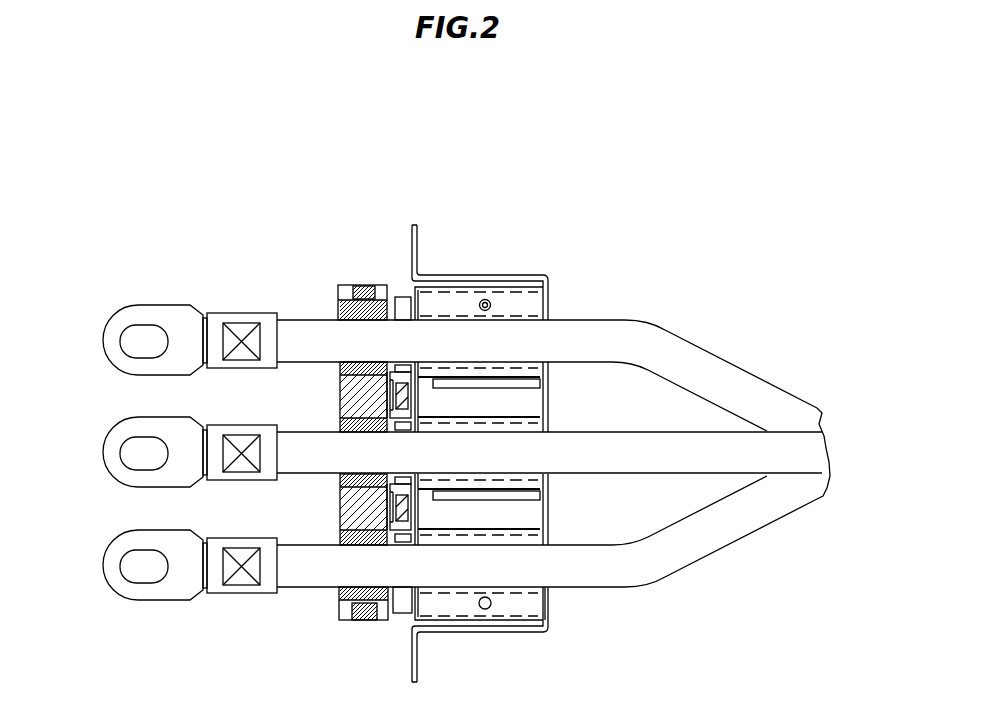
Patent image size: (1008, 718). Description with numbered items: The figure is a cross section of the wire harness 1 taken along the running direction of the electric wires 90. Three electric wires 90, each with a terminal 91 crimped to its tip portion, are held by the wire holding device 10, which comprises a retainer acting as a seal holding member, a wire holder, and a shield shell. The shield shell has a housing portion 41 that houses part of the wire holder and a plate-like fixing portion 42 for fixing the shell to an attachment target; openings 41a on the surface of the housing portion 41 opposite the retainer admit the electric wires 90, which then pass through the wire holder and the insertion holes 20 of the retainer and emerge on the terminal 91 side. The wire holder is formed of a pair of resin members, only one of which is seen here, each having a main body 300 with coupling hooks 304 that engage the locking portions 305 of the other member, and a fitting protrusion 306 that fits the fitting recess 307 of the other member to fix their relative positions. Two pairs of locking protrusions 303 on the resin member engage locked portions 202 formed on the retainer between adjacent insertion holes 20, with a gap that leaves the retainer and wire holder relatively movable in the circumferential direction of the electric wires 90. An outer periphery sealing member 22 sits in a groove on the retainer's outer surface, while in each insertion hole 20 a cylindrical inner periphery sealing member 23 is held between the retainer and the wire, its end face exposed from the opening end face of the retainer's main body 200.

The wire harness 1 is at (237, 185).
The wire holding device 10 is at (370, 222).
The insertion hole 20 is at (335, 313).
The outer periphery sealing member 22 is at (366, 622).
The inner periphery sealing member 23 is at (338, 537).
The housing portion 41 is at (487, 273).
The opening 41a is at (555, 592).
The fixing portion 42 is at (415, 252).
The electric wire 90 is at (805, 490).
The terminal 91 is at (120, 323).
The main body 200 is at (342, 622).
The locked portion 202 is at (398, 395).
The main body 300 is at (548, 625).
The locking protrusion 303 is at (390, 397).
The coupling hook 304 is at (545, 382).
The locking portion 305 is at (545, 420).
The fitting protrusion 306 is at (490, 300).
The fitting recess 307 is at (490, 608).